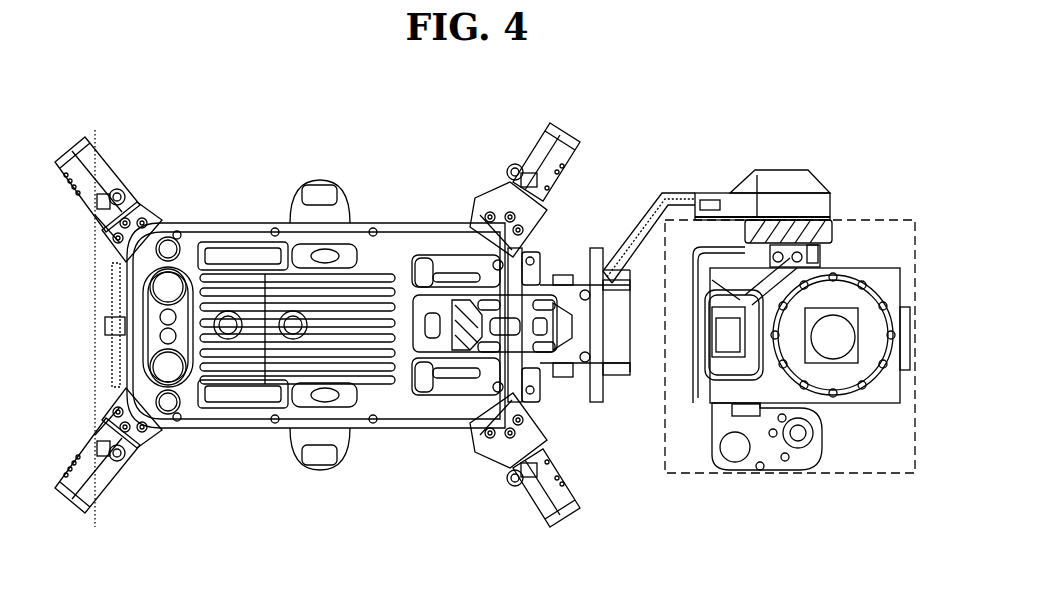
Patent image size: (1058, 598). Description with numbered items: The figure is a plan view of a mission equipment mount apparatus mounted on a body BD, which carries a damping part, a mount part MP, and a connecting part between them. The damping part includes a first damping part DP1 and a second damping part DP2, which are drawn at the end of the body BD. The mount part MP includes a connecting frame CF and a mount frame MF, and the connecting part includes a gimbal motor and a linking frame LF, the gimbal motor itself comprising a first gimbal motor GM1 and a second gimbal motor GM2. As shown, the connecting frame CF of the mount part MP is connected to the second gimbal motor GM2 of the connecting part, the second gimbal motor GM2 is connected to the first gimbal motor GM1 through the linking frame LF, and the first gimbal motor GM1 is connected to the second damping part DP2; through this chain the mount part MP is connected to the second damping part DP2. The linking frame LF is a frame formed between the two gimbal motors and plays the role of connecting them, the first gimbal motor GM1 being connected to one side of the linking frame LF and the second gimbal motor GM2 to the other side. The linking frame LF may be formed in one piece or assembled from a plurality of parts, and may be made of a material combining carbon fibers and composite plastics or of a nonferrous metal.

The body BD is at (245, 228).
The first damping part DP1 is at (412, 265).
The second damping part DP2 is at (592, 315).
The linking frame LF is at (679, 205).
The first gimbal motor GM1 is at (628, 338).
The second gimbal motor GM2 is at (823, 207).
The mount part MP is at (882, 221).
The connecting frame CF is at (830, 235).
The mount frame MF is at (871, 407).